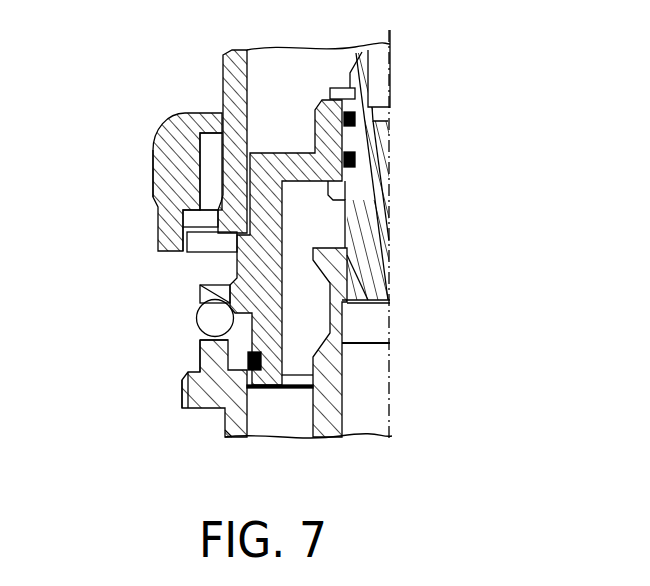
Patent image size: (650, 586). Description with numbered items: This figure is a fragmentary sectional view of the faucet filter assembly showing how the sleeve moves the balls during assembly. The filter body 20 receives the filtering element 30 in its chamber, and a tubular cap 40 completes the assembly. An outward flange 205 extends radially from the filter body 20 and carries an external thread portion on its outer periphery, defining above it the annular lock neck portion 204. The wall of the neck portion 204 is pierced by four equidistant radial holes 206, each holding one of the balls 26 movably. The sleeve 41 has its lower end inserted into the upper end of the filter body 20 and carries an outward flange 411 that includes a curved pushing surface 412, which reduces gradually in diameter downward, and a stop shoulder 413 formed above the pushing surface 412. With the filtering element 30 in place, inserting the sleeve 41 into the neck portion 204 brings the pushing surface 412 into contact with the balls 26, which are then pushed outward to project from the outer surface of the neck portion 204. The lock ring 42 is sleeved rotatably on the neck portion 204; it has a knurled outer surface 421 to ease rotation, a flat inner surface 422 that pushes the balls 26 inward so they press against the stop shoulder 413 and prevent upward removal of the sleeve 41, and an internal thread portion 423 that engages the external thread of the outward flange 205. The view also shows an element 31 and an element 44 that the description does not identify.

The filter body 20 is at (203, 421).
The annular lock neck portion 204 is at (200, 350).
The outward flange 205 is at (186, 397).
The radial holes 206 is at (198, 328).
The balls 26 is at (208, 318).
The filtering element 30 is at (303, 432).
The annular groove 31 is at (340, 320).
The tubular cap 40 is at (214, 65).
The sleeve 41 is at (280, 168).
The outward flange 411 is at (236, 262).
The curved pushing surface 412 is at (200, 293).
The stop shoulder 413 is at (231, 284).
The lock ring 42 is at (177, 142).
The knurled outer surface 421 is at (153, 163).
The flat inner surface 422 is at (205, 148).
The internal thread portion 423 is at (182, 240).
The stem 44 is at (380, 202).